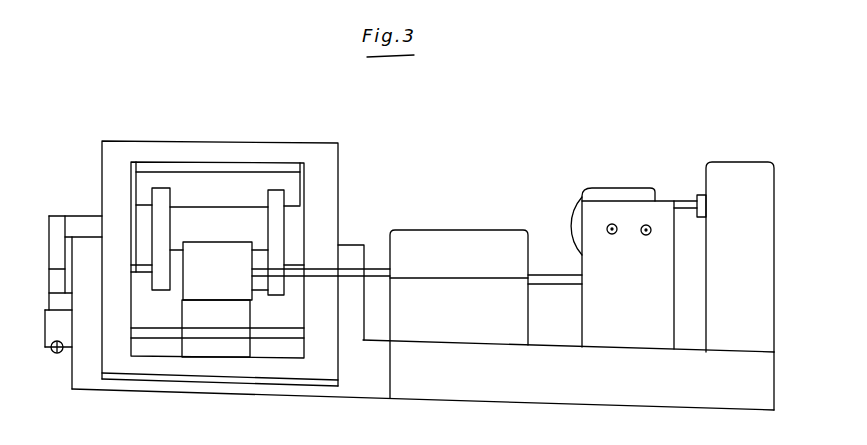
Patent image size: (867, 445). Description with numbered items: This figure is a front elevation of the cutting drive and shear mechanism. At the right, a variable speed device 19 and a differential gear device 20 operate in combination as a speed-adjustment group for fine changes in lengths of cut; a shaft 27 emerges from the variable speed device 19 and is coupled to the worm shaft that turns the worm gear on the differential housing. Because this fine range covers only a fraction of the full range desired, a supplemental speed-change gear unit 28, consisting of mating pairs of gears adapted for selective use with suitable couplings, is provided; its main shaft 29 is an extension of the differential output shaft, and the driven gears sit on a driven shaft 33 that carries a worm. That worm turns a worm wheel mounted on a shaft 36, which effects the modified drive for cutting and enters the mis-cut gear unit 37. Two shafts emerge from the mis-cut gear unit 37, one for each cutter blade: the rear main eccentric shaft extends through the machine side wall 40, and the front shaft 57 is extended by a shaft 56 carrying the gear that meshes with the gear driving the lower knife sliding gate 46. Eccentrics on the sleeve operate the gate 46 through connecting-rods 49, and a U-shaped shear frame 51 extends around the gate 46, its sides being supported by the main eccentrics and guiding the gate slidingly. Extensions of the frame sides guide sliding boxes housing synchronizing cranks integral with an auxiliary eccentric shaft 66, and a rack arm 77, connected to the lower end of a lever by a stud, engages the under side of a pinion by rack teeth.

The variable speed device 19 is at (755, 162).
The differential gear device 20 is at (623, 188).
The shaft 27 is at (688, 212).
The speed-change gear unit 28 is at (580, 218).
The main shaft 29 is at (612, 235).
The driven shaft 33 is at (646, 235).
The shaft 36 is at (557, 287).
The mis-cut gear unit 37 is at (483, 230).
The machine side wall 40 is at (355, 243).
The lower knife sliding gate 46 is at (240, 202).
The connecting-rods 49 is at (170, 228).
The U-shaped shear frame 51 is at (335, 205).
The shaft 56 is at (290, 278).
The front shaft 57 is at (383, 282).
The auxiliary eccentric shaft 66 is at (212, 338).
The rack arm 77 is at (58, 354).